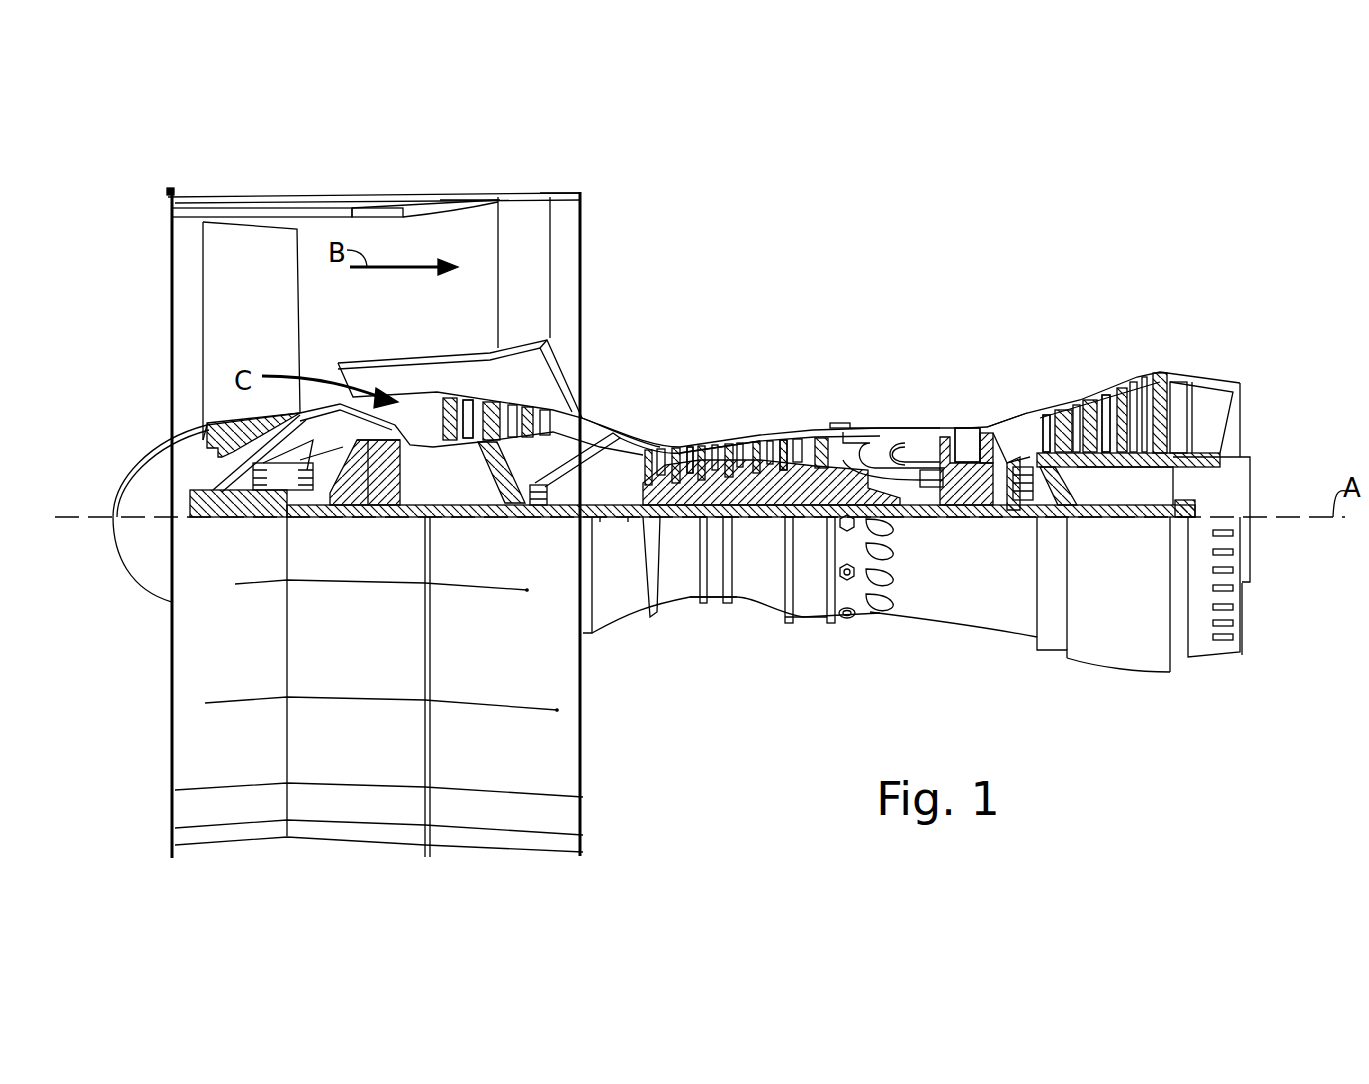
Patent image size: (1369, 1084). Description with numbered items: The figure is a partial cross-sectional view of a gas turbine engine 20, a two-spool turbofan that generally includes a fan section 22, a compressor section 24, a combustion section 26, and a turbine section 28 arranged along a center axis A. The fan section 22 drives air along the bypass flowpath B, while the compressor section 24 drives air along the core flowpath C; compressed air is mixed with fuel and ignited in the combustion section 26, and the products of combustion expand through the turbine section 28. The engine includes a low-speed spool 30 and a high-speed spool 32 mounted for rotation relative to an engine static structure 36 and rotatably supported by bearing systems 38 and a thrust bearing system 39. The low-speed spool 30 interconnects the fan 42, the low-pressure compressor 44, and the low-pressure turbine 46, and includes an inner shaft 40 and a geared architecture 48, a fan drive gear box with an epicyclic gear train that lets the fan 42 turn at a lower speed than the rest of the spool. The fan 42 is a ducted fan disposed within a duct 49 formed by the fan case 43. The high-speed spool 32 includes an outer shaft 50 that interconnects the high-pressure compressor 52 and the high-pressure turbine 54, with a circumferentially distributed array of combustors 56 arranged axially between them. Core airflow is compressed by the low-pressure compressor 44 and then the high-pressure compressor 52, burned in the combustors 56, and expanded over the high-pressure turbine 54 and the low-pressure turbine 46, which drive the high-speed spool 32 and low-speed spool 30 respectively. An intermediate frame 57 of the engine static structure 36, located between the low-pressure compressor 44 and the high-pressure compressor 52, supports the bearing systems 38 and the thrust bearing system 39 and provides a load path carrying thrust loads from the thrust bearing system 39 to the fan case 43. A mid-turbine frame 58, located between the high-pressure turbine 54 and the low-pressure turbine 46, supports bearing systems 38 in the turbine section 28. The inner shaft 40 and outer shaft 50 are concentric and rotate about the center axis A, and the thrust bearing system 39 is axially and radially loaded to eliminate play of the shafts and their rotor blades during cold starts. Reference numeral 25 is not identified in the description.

The gas turbine engine 20 is at (1075, 205).
The fan section 22 is at (160, 170).
The compressor section 24 is at (825, 312).
The turbine blade 25 is at (1065, 402).
The combustion section 26 is at (830, 312).
The turbine section 28 is at (945, 312).
The low-speed spool 30 is at (757, 540).
The high-speed spool 32 is at (790, 487).
The engine static structure 36 is at (812, 640).
The bearing systems 38 is at (258, 505).
The thrust bearing system 39 is at (628, 520).
The inner shaft 40 is at (600, 520).
The fan 42 is at (236, 312).
The fan case 43 is at (468, 198).
The low-pressure compressor 44 is at (505, 400).
The low-pressure turbine 46 is at (1112, 402).
The geared architecture 48 is at (383, 507).
The duct 49 is at (544, 194).
The outer shaft 50 is at (895, 500).
The high-pressure compressor 52 is at (713, 487).
The high-pressure turbine 54 is at (970, 427).
The combustors 56 is at (885, 453).
The intermediate frame 57 is at (600, 412).
The mid-turbine frame 58 is at (1012, 405).